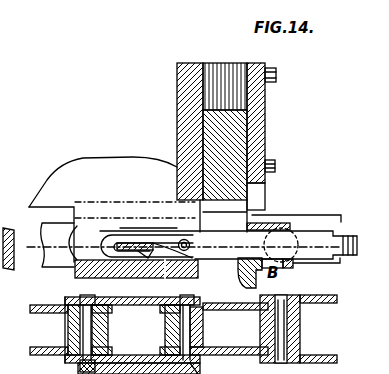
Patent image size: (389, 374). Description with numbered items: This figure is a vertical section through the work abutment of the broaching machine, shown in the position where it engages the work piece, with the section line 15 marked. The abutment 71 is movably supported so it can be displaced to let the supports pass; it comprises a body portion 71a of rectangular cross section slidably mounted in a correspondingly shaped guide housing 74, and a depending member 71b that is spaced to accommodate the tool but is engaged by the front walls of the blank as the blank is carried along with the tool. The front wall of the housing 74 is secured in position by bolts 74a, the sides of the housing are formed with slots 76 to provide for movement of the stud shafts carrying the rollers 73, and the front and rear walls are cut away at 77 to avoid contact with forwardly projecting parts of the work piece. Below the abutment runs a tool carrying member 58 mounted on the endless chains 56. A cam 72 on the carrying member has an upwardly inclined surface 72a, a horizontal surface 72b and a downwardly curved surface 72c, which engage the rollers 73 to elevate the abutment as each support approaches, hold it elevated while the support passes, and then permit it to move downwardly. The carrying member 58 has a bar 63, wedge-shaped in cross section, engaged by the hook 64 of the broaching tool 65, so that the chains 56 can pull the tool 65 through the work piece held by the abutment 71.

The housing 74 is at (177, 79).
The bolts 74a is at (277, 74).
The slots 76 is at (176, 120).
The body portion 71a is at (240, 118).
The rollers 73 is at (265, 150).
The abutment 71 is at (262, 200).
The depending member 71b is at (233, 228).
The cam 72 is at (108, 158).
The upwardly inclined surface 72a is at (45, 175).
The horizontal surface 72b is at (84, 157).
The downwardly curved surface 72c is at (177, 165).
The cut-away 77 is at (283, 190).
The axis line 15 is at (321, 207).
The endless chains 56 is at (45, 217).
The tool carrying member 58 is at (75, 268).
The hook 64 is at (104, 262).
The bar 63 is at (146, 262).
The broaching tool 65 is at (351, 259).